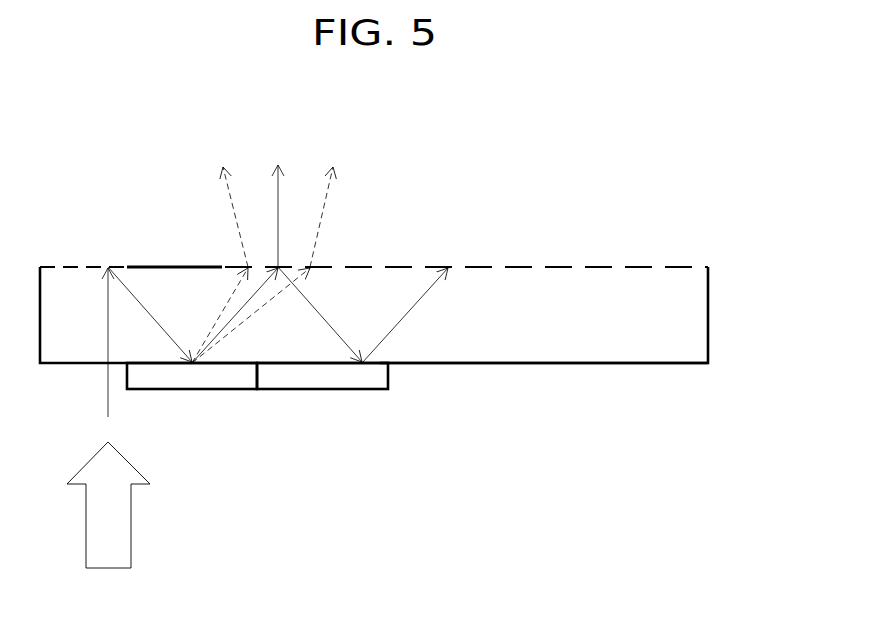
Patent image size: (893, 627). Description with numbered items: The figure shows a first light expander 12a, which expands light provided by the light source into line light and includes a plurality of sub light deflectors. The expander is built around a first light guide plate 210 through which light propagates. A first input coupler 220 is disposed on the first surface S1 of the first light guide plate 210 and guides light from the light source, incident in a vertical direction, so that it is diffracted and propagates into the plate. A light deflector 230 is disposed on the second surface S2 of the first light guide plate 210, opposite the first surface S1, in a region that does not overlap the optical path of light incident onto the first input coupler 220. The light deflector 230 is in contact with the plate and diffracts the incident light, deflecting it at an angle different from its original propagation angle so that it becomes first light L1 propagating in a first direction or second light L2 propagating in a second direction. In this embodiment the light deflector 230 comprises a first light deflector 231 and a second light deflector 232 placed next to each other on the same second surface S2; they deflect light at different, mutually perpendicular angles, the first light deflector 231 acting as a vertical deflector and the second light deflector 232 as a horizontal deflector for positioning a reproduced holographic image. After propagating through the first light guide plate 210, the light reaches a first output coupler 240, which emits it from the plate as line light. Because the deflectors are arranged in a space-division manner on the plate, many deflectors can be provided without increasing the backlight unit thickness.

The first light expander 12a is at (717, 108).
The first light guide plate 210 is at (700, 315).
The first input coupler 220 is at (77, 266).
The light deflector 230 is at (337, 452).
The first light deflector 231 is at (192, 382).
The second light deflector 232 is at (323, 382).
The first output coupler 240 is at (557, 266).
The first surface S1 is at (174, 266).
The second surface S2 is at (592, 364).
The first light L1 is at (222, 315).
The second light L2 is at (243, 320).